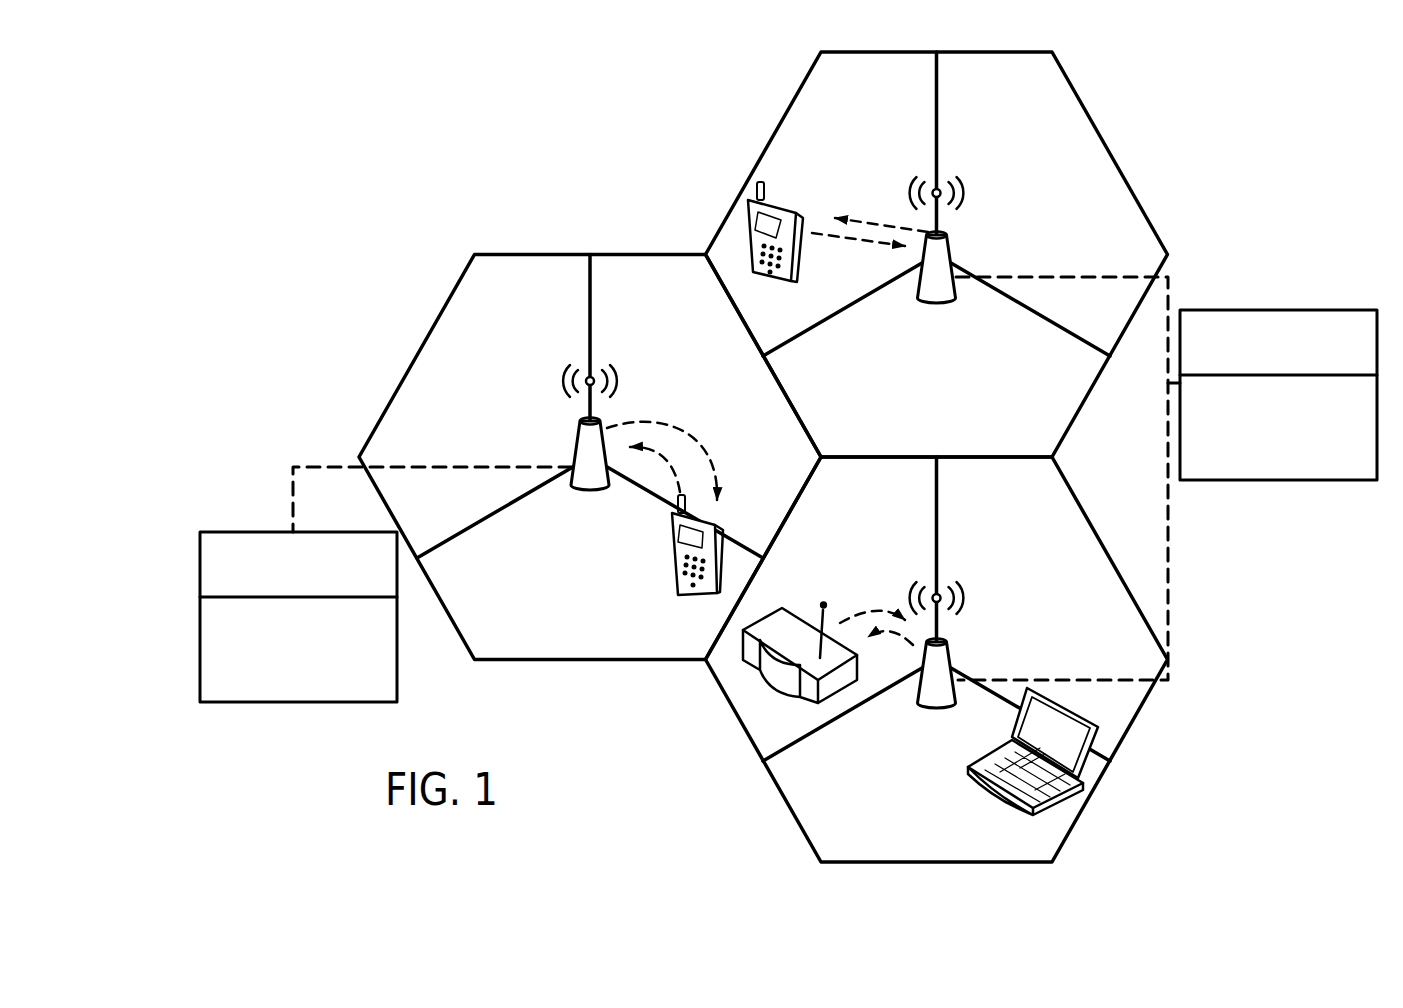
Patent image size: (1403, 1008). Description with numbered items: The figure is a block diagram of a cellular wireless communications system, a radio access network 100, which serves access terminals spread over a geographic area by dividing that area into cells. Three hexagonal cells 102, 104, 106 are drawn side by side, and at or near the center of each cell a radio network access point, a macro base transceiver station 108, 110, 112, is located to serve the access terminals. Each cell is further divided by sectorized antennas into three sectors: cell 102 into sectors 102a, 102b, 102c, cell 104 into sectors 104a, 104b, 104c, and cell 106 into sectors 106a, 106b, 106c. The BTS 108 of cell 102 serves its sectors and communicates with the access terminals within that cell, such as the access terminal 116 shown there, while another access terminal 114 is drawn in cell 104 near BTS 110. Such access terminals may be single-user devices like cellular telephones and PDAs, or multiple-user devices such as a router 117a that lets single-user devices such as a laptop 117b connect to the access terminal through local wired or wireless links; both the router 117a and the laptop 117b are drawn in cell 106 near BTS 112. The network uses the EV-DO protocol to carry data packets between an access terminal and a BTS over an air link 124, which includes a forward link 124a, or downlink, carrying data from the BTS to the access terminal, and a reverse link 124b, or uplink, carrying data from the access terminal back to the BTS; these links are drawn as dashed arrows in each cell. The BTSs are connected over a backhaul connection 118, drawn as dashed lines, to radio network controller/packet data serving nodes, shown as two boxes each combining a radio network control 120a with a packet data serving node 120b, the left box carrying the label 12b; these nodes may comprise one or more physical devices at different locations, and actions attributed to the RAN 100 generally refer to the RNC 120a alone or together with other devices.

The radio access network 100 is at (601, 111).
The cell 102 is at (412, 330).
The sector 102a is at (479, 402).
The sector 102b is at (658, 335).
The sector 102c is at (589, 617).
The cell 104 is at (1097, 110).
The sector 104a is at (844, 100).
The sector 104b is at (1045, 196).
The sector 104c is at (950, 380).
The cell 106 is at (732, 764).
The sector 106a is at (892, 493).
The sector 106b is at (1068, 612).
The sector 106c is at (907, 816).
The macro base transceiver station 108 is at (565, 470).
The macro base transceiver station 110 is at (917, 293).
The macro base transceiver station 112 is at (920, 704).
The access terminal 114 is at (800, 277).
The access terminal 116 is at (677, 585).
The router 117a is at (770, 672).
The laptop 117b is at (1012, 800).
The backhaul connection 118 is at (292, 490).
The radio network controller 120a is at (199, 565).
The packet data serving node 120b is at (1278, 427).
The packet data serving node 12b is at (298, 649).
The air link 124 is at (707, 462).
The forward link 124a is at (693, 446).
The reverse link 124b is at (658, 470).